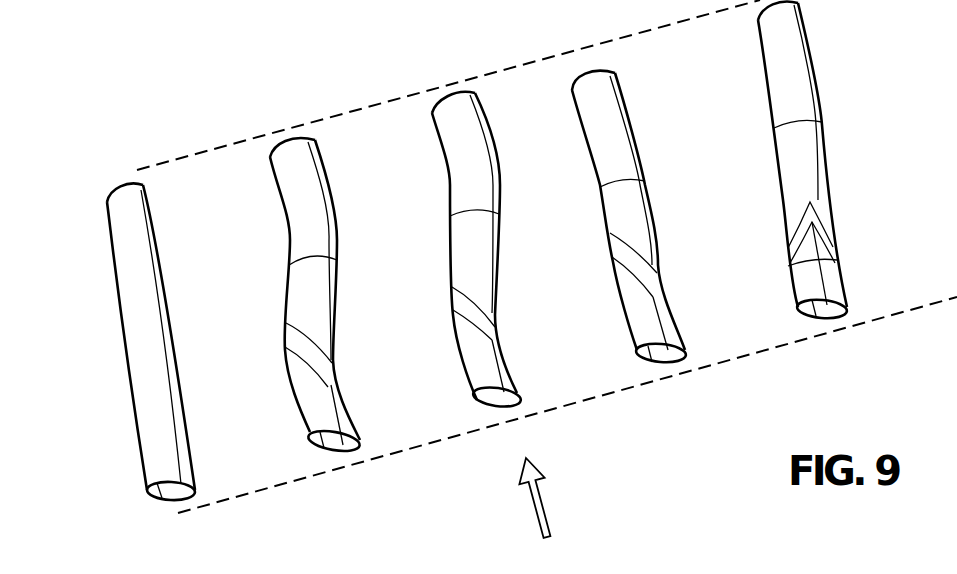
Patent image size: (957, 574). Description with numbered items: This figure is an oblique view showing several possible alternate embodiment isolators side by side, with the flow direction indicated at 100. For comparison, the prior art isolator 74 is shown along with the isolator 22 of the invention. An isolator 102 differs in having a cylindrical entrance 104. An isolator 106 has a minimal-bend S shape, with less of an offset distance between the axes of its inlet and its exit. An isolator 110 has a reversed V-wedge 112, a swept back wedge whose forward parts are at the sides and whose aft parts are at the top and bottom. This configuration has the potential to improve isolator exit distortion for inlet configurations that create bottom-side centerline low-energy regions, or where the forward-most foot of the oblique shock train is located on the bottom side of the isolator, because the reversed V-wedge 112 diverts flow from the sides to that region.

The prior art isolator 74 is at (123, 348).
The isolator 22 is at (285, 292).
The isolator 102 is at (496, 300).
The cylindrical entrance 104 is at (498, 400).
The isolator 106 is at (645, 138).
The isolator 110 is at (844, 161).
The reversed V-wedge 112 is at (817, 230).
The flow direction 100 is at (543, 505).